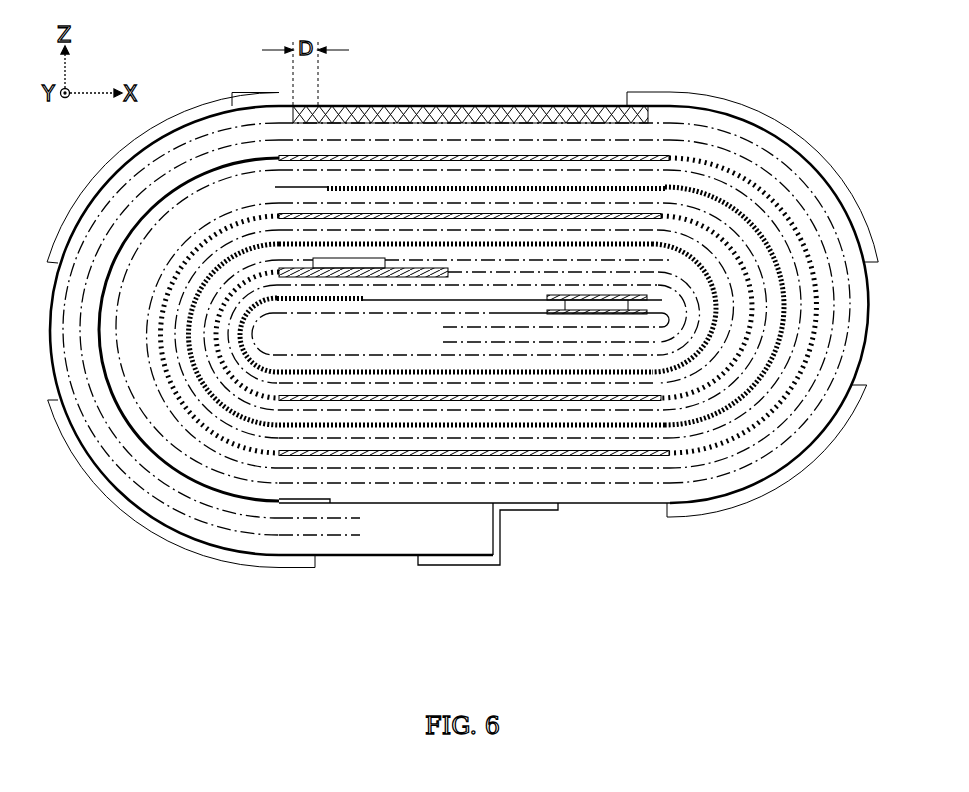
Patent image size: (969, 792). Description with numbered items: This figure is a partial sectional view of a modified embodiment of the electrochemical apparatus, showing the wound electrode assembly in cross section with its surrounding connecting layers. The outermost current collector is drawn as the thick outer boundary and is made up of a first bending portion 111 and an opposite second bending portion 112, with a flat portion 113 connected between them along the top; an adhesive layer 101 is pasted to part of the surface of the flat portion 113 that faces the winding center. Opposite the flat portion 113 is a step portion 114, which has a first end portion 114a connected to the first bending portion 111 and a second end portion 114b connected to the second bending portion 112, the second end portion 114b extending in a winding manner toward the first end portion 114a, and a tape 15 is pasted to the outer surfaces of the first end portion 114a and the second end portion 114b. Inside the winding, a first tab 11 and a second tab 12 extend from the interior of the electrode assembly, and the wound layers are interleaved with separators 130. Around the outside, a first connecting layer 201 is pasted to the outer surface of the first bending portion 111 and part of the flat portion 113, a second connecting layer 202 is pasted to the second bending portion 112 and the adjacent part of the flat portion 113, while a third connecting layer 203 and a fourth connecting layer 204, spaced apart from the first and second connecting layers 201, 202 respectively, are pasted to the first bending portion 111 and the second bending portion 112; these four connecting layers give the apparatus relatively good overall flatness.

The adhesive layer 101 is at (550, 107).
The first tab 11 is at (353, 268).
The second tab 12 is at (610, 302).
The tape 15 is at (528, 507).
The first bending portion 111 is at (82, 445).
The second bending portion 112 is at (796, 147).
The flat portion 113 is at (482, 107).
The step portion 114 is at (478, 604).
The first end portion 114a is at (400, 558).
The second end portion 114b is at (643, 505).
The separator 130 is at (757, 443).
The first connecting layer 201 is at (225, 105).
The second connecting layer 202 is at (743, 109).
The third connecting layer 203 is at (172, 537).
The fourth connecting layer 204 is at (823, 440).